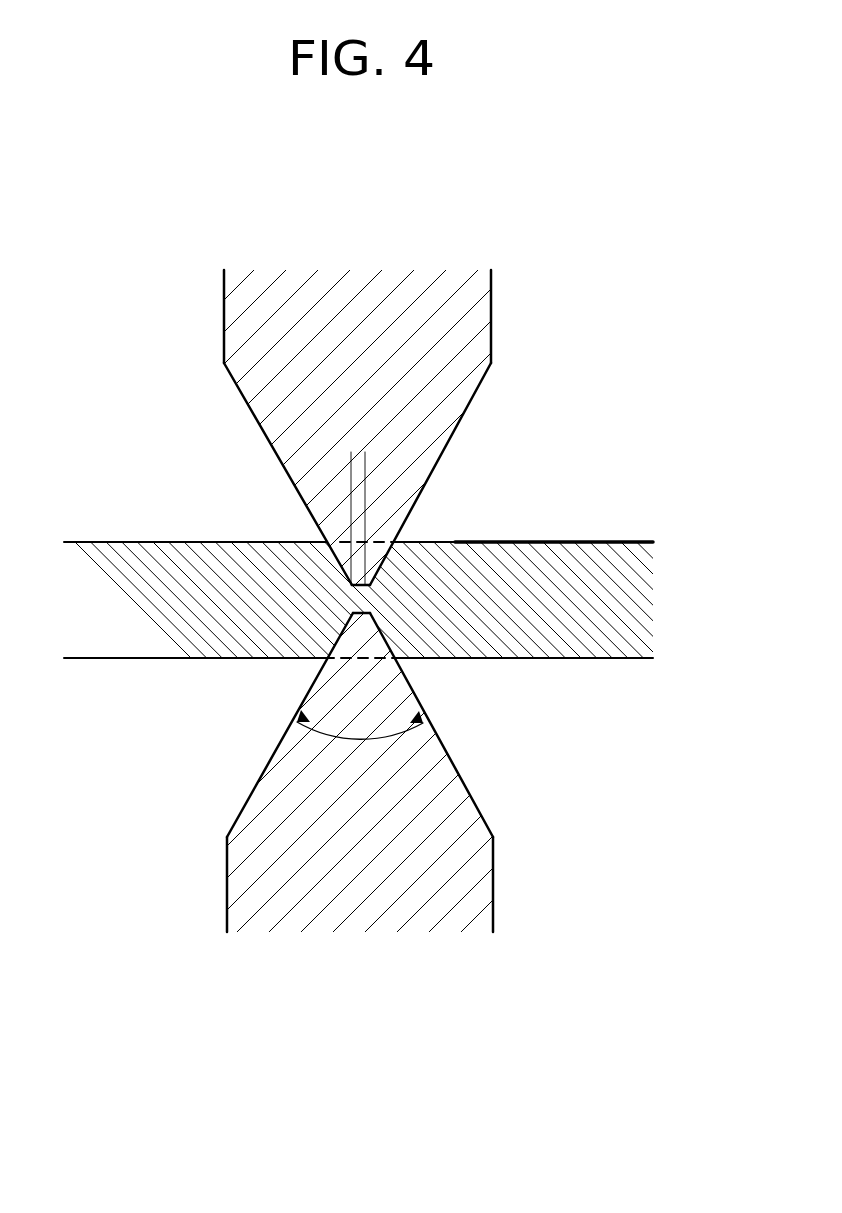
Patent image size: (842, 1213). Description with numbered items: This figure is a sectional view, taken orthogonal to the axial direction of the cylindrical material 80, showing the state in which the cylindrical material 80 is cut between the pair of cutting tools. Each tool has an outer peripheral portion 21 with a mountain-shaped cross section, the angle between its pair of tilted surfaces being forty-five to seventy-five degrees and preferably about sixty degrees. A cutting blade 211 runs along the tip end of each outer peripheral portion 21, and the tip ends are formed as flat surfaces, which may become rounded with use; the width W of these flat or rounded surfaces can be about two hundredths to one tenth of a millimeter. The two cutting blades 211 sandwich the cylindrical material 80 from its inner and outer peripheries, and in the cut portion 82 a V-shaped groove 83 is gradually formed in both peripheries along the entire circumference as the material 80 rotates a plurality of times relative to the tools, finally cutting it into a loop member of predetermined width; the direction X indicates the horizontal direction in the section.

The outer peripheral portion 21 is at (252, 414).
The cutting blade 211 is at (367, 593).
The cylindrical material 80 is at (115, 565).
The cut portion 82 is at (357, 600).
The V-shaped groove 83 is at (377, 623).
The width of the flat surfaces or rounded surfaces W is at (320, 474).
The direction X is at (695, 712).